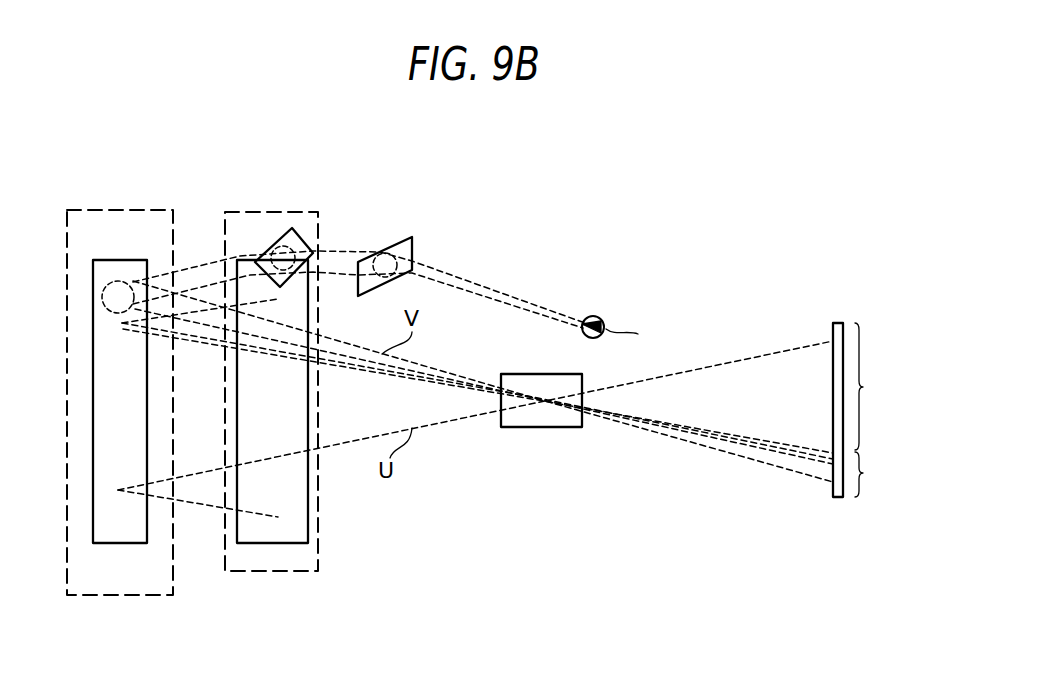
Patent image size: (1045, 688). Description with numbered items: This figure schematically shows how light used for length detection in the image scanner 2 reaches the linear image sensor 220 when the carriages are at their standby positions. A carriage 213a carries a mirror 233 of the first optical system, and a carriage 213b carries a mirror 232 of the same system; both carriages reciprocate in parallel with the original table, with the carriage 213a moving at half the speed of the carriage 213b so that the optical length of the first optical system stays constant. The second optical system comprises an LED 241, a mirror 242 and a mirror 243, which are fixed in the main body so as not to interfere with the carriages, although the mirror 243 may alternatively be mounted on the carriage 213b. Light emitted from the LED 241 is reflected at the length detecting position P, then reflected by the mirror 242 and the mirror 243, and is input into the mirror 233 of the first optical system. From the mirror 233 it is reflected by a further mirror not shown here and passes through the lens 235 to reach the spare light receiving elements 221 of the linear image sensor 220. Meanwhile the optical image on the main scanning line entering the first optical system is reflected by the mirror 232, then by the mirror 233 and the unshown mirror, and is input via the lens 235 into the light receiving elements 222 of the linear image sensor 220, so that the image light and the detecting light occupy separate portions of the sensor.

The image display apparatus 2 is at (493, 183).
The carriage 213a is at (118, 595).
The carriage 213b is at (298, 572).
The linear image sensor 220 is at (838, 497).
The spare light receiving elements 221 is at (876, 474).
The light receiving elements 222 is at (879, 386).
The mirror 232 is at (277, 543).
The mirror 233 is at (119, 260).
The lens 235 is at (540, 427).
The LED 241 is at (594, 315).
The mirror 242 is at (412, 239).
The mirror 243 is at (288, 230).